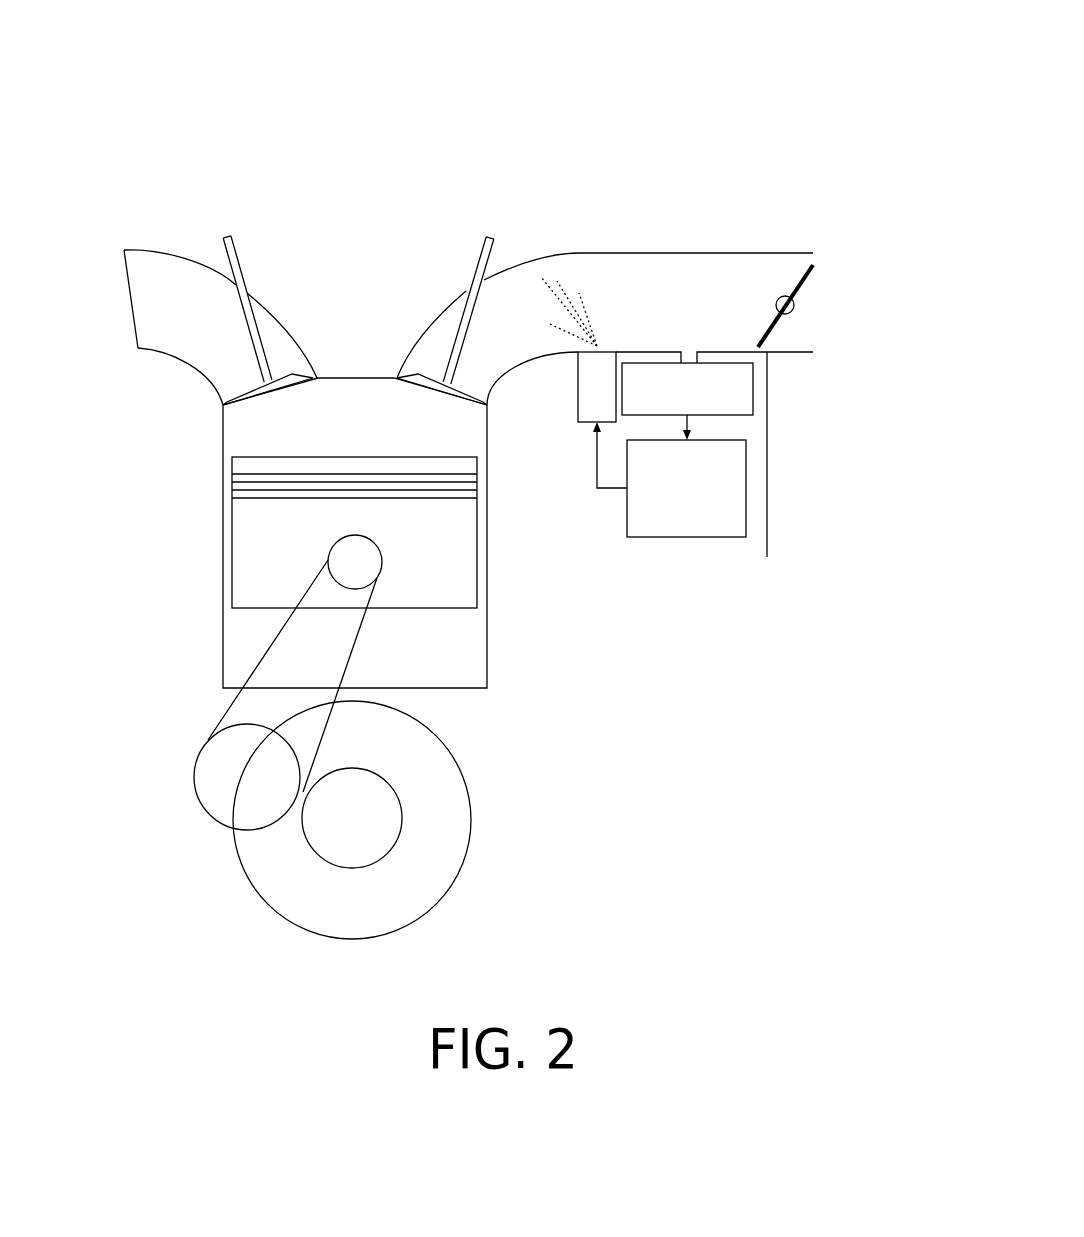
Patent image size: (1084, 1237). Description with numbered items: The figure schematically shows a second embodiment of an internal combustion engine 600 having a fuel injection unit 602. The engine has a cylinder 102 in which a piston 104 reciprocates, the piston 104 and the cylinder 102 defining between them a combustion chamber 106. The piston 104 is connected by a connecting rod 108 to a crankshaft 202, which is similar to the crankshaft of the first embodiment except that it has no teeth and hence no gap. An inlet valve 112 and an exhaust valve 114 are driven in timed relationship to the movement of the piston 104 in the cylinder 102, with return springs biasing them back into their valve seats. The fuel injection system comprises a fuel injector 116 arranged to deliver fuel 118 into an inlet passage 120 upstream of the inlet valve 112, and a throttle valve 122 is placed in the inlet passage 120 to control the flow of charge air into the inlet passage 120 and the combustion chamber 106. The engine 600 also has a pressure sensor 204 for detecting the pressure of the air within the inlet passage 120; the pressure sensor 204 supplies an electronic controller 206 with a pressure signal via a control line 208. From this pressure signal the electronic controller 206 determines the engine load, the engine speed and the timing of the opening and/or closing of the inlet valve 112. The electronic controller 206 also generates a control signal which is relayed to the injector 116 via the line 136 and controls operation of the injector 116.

The internal combustion engine 600 is at (212, 96).
The cylinder 102 is at (220, 582).
The piston 104 is at (453, 590).
The combustion chamber 106 is at (243, 432).
The connecting rod 108 is at (215, 718).
The inlet valve 112 is at (483, 232).
The exhaust valve 114 is at (230, 232).
The fuel injector 116 is at (597, 407).
The fuel 118 is at (598, 327).
The inlet passage 120 is at (712, 272).
The throttle valve 122 is at (807, 277).
The line 136 is at (595, 470).
The crankshaft 202 is at (438, 873).
The pressure sensor 204 is at (753, 388).
The electronic controller 206 is at (746, 483).
The control line 208 is at (687, 430).
The fuel injection unit 602 is at (767, 557).